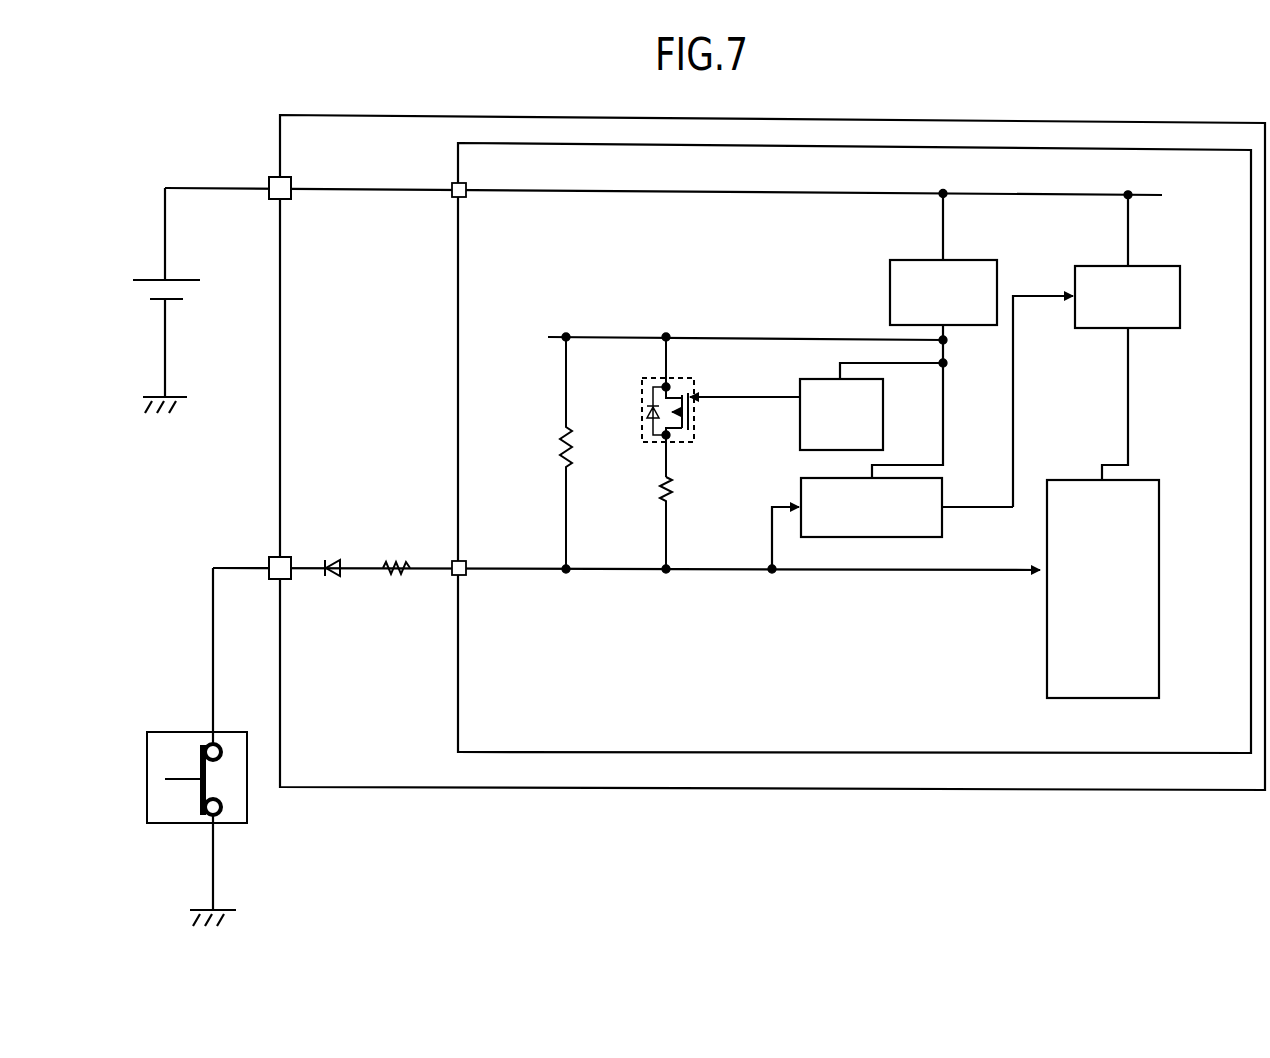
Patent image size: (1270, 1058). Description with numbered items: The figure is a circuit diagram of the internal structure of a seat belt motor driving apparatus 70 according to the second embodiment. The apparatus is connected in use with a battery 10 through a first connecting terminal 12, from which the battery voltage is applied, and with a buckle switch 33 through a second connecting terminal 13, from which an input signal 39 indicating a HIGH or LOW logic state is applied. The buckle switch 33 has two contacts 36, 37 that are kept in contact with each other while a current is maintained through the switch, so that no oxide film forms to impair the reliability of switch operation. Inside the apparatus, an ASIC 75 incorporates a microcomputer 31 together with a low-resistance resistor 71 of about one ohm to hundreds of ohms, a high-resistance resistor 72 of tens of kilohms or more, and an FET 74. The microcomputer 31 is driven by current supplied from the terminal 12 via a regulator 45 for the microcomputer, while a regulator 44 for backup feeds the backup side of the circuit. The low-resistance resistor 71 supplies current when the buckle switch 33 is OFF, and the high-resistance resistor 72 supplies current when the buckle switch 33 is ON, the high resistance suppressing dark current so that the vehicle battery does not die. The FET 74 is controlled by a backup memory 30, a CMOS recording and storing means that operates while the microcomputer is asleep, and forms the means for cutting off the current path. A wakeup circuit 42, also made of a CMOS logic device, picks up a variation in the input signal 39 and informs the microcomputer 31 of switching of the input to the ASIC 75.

The battery 10 is at (200, 293).
The first connecting terminal 12 is at (291, 199).
The second connecting terminal 13 is at (290, 578).
The backup memory 30 is at (800, 432).
The microcomputer 31 is at (1159, 592).
The buckle switch 33 is at (163, 823).
The contact 36 is at (213, 744).
The contact 37 is at (202, 742).
The input signal 39 is at (432, 569).
The wakeup circuit 42 is at (942, 527).
The regulator for backup 44 is at (997, 282).
The regulator for μC 45 is at (1180, 300).
The motor driving apparatus 70 is at (1198, 790).
The resistor 71 is at (658, 487).
The resistor 72 is at (565, 428).
The FET 74 is at (658, 378).
The ASIC 75 is at (457, 729).